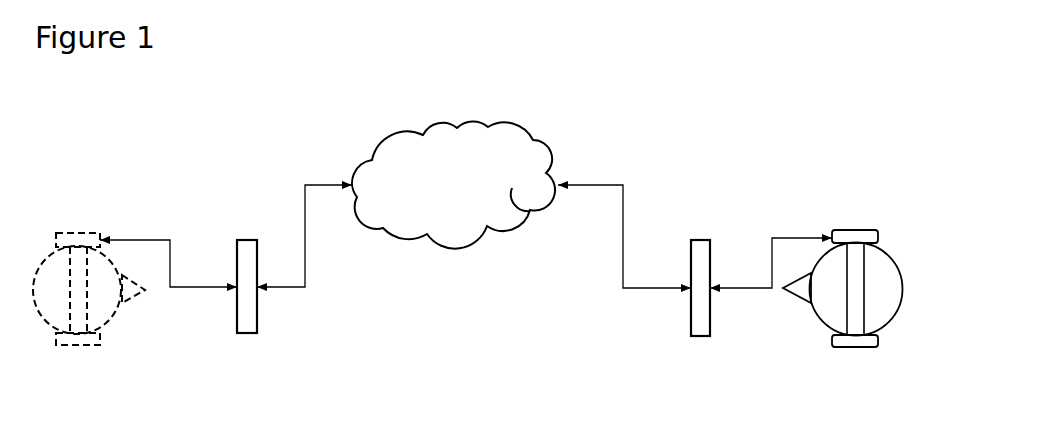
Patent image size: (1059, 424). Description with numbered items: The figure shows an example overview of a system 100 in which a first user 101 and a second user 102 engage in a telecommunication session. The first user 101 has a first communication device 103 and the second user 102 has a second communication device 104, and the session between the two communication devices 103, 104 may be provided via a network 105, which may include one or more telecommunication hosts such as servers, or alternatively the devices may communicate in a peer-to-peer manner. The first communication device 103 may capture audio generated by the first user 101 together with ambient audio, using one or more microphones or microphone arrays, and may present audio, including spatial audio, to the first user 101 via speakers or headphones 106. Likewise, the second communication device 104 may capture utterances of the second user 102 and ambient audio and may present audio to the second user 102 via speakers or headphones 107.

The system 100 is at (282, 108).
The first user 101 is at (85, 293).
The second user 102 is at (853, 285).
The first communication device 103 is at (250, 317).
The second communication device 104 is at (700, 327).
The network 105 is at (453, 184).
The speakers or headphones 106 is at (102, 238).
The speakers or headphones 107 is at (831, 229).